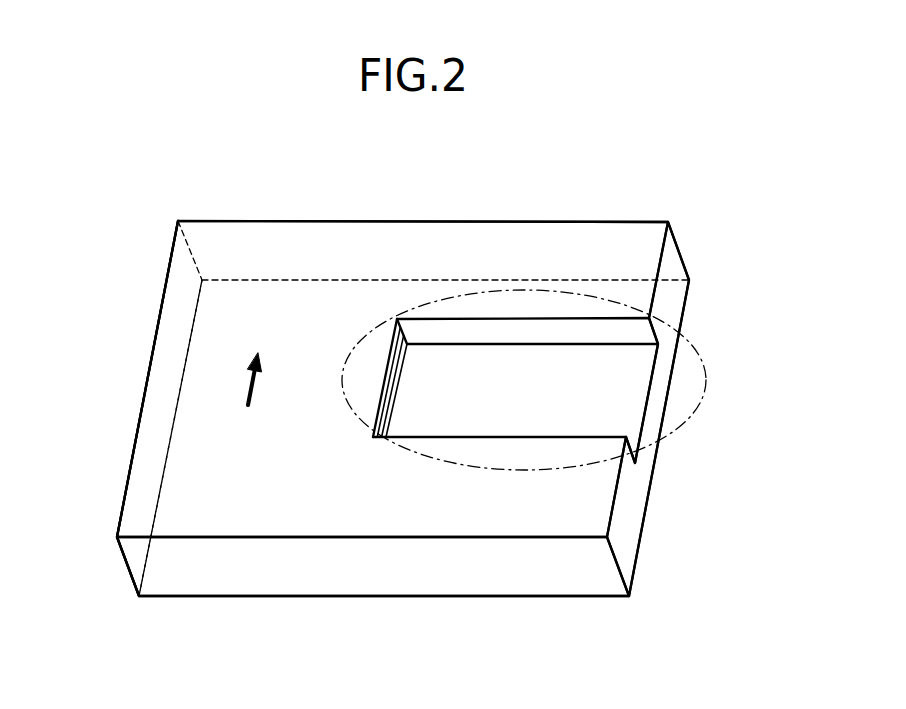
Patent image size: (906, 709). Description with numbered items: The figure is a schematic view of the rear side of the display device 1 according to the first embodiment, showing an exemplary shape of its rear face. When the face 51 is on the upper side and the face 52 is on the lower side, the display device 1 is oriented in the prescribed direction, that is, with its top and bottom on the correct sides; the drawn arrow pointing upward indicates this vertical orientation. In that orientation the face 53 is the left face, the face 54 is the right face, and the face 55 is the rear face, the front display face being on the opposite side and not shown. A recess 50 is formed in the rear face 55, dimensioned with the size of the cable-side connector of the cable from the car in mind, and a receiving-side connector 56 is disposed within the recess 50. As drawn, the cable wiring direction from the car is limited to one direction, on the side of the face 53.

The display device 1 is at (684, 256).
The recess 50 is at (710, 381).
The face 51 is at (305, 253).
The face 52 is at (307, 565).
The face 53 is at (670, 296).
The face 54 is at (165, 371).
The face 55 is at (193, 457).
The receiving-side connector 56 is at (386, 376).